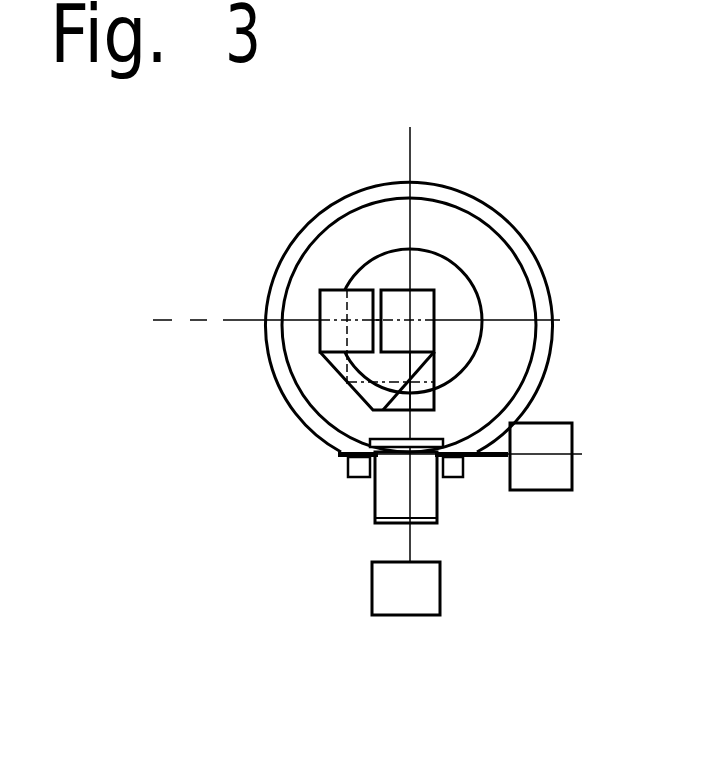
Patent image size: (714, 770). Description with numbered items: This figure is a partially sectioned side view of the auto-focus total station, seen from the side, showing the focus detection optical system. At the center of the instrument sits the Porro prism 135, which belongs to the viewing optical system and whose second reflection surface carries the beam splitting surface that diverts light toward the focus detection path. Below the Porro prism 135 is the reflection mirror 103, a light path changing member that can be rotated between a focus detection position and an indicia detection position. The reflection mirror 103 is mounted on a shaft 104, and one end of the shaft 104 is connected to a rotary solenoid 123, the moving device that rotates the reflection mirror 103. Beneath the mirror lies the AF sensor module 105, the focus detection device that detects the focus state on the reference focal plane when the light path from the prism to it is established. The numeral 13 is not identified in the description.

The Porro prism 135 is at (422, 307).
The housing 13 is at (422, 399).
The reflection mirror 103 is at (392, 488).
The shaft 104 is at (506, 457).
The rotary solenoid 123 is at (545, 470).
The AF sensor module 105 is at (396, 598).